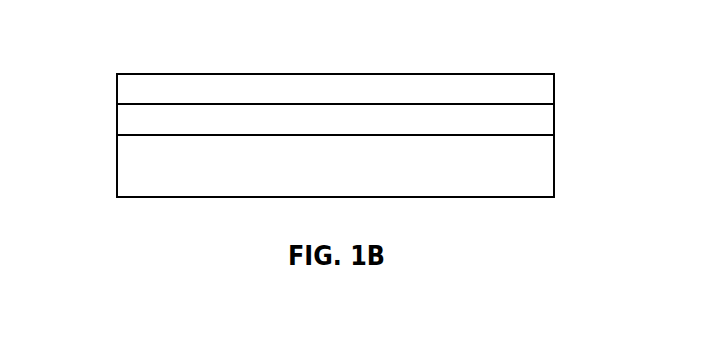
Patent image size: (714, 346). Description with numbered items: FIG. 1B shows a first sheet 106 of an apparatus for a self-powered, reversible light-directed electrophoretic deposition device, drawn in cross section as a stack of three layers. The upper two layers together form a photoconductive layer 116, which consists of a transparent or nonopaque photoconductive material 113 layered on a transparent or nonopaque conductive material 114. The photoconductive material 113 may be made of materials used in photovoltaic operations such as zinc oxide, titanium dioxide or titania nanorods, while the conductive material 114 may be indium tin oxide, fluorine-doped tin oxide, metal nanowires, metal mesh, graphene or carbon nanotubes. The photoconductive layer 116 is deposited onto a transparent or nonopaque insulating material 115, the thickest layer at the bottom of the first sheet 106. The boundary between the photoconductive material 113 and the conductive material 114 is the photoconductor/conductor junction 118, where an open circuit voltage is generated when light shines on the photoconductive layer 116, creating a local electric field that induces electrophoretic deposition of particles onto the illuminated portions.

The first sheet 106 is at (127, 47).
The photoconductive material 113 is at (352, 99).
The conductive material 114 is at (352, 128).
The insulating material 115 is at (352, 175).
The photoconductive layer 116 is at (557, 74).
The photoconductor/conductor junction 118 is at (116, 107).